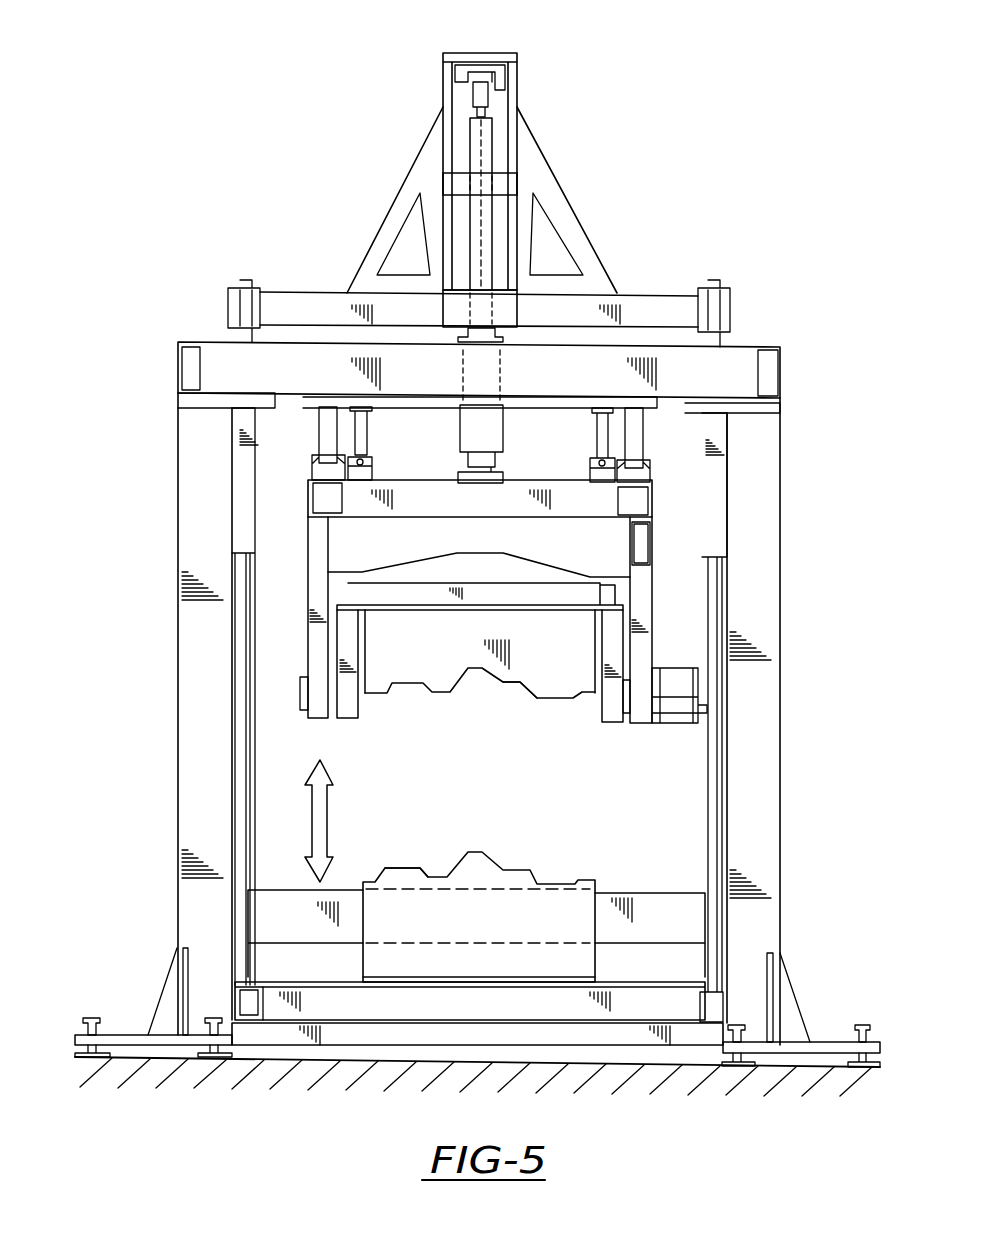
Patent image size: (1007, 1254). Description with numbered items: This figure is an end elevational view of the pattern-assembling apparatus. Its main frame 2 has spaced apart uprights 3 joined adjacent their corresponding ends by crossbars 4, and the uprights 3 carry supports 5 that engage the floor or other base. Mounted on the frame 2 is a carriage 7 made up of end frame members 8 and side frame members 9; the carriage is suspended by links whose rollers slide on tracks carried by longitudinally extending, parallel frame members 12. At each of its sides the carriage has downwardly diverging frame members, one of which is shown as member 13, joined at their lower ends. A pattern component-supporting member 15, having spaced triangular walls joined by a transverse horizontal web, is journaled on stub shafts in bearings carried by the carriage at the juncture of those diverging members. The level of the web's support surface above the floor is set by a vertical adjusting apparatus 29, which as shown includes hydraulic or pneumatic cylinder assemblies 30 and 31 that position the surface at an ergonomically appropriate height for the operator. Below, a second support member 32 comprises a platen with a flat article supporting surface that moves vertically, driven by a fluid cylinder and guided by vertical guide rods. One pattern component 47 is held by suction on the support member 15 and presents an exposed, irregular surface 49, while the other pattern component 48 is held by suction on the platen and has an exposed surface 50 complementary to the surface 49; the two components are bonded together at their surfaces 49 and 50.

The main frame 2 is at (745, 286).
The uprights 3 is at (178, 615).
The crossbars 4 is at (780, 363).
The supports 5 is at (580, 381).
The carriage 7 is at (663, 521).
The end frame members 8 is at (545, 497).
The side frame members 9 is at (630, 535).
The longitudinally extending, parallel frame members 12 is at (323, 433).
The downwardly diverging frame member 13 is at (643, 610).
The pattern component-supporting member 15 is at (313, 730).
The vertical adjusting apparatus 29 is at (625, 163).
The hydraulic or pneumatic cylinder assembly 30 is at (482, 250).
The hydraulic or pneumatic cylinder assembly 31 is at (363, 433).
The second support member 32 is at (672, 970).
The pattern component 47 is at (397, 670).
The pattern component 48 is at (498, 878).
The irregular surface 49 is at (520, 687).
The exposed surface 50 is at (422, 868).